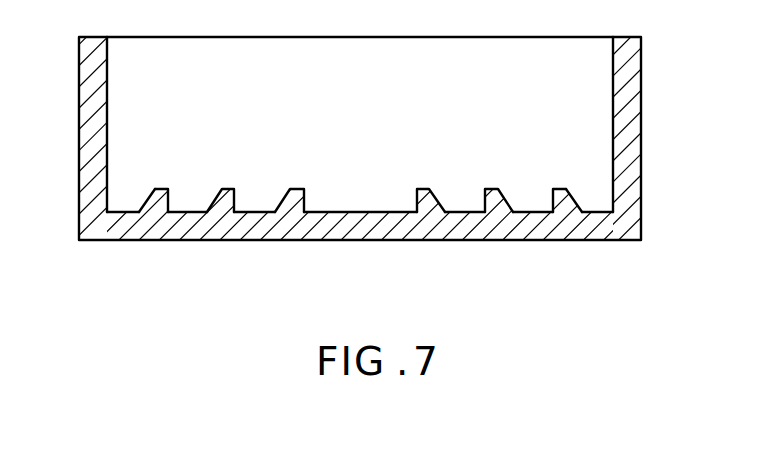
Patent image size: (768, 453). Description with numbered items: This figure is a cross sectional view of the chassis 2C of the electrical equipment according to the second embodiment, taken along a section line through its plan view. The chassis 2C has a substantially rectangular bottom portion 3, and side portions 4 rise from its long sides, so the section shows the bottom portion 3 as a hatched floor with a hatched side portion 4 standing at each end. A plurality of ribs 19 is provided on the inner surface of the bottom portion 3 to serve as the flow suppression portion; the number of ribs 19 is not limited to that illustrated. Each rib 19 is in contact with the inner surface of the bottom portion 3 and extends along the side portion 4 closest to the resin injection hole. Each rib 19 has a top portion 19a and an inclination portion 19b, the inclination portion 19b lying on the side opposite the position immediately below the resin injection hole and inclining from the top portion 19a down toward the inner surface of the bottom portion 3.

The chassis 2C is at (645, 55).
The bottom portion 3 is at (372, 230).
The side portion 4 is at (90, 130).
The rib 19 is at (235, 179).
The top portion 19a is at (158, 189).
The inclination portion 19b is at (145, 206).